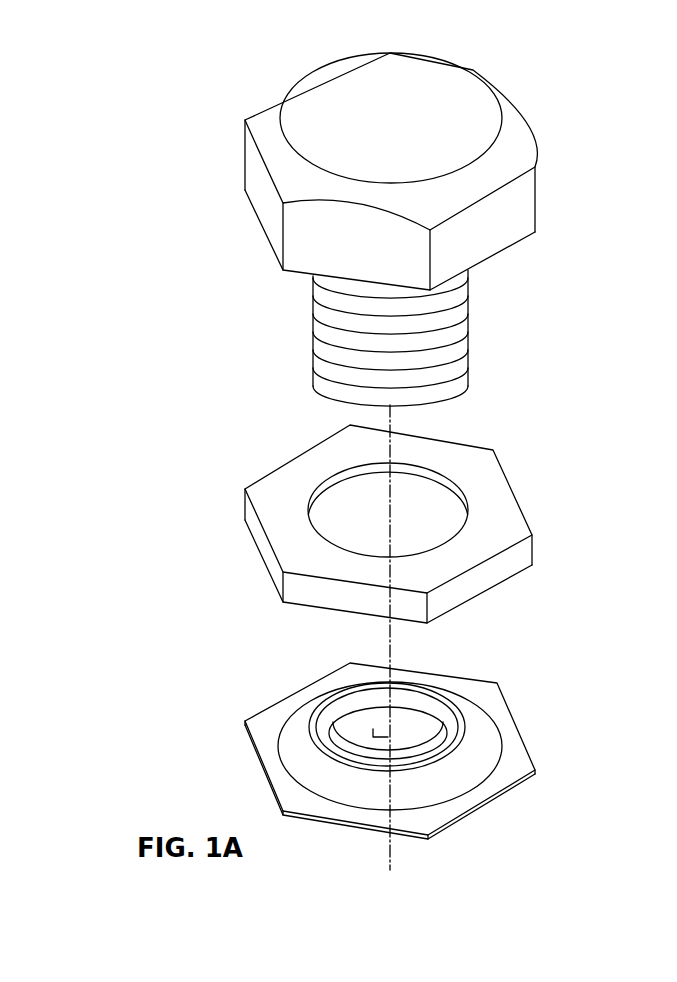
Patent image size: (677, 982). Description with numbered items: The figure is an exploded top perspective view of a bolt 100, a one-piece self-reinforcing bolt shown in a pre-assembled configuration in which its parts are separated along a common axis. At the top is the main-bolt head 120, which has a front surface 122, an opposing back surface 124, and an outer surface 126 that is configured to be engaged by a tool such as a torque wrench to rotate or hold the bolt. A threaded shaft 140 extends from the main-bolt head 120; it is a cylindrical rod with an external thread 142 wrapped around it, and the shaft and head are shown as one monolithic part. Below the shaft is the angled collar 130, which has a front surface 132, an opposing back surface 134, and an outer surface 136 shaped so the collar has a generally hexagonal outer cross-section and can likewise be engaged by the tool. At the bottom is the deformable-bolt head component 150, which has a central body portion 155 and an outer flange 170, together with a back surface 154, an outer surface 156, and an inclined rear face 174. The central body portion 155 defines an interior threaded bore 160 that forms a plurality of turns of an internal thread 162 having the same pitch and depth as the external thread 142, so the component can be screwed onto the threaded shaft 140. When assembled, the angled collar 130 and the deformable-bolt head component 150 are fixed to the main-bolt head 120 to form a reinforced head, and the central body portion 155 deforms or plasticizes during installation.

The bolt 100 is at (247, 83).
The main-bolt head 120 is at (535, 108).
The front surface 122 is at (508, 248).
The back surface 124 is at (414, 131).
The outer surface 126 is at (383, 254).
The angled collar 130 is at (537, 472).
The front surface 132 is at (295, 603).
The back surface 134 is at (275, 485).
The outer surface 136 is at (267, 548).
The threaded shaft 140 is at (293, 348).
The external thread 142 is at (460, 342).
The deformable-bolt head component 150 is at (533, 717).
The back surface 154 is at (410, 702).
The central body portion 155 is at (483, 768).
The outer surface 156 is at (462, 818).
The interior threaded bore 160 is at (415, 690).
The internal thread 162 is at (345, 735).
The outer flange 170 is at (268, 726).
The inclined rear face 174 is at (303, 783).